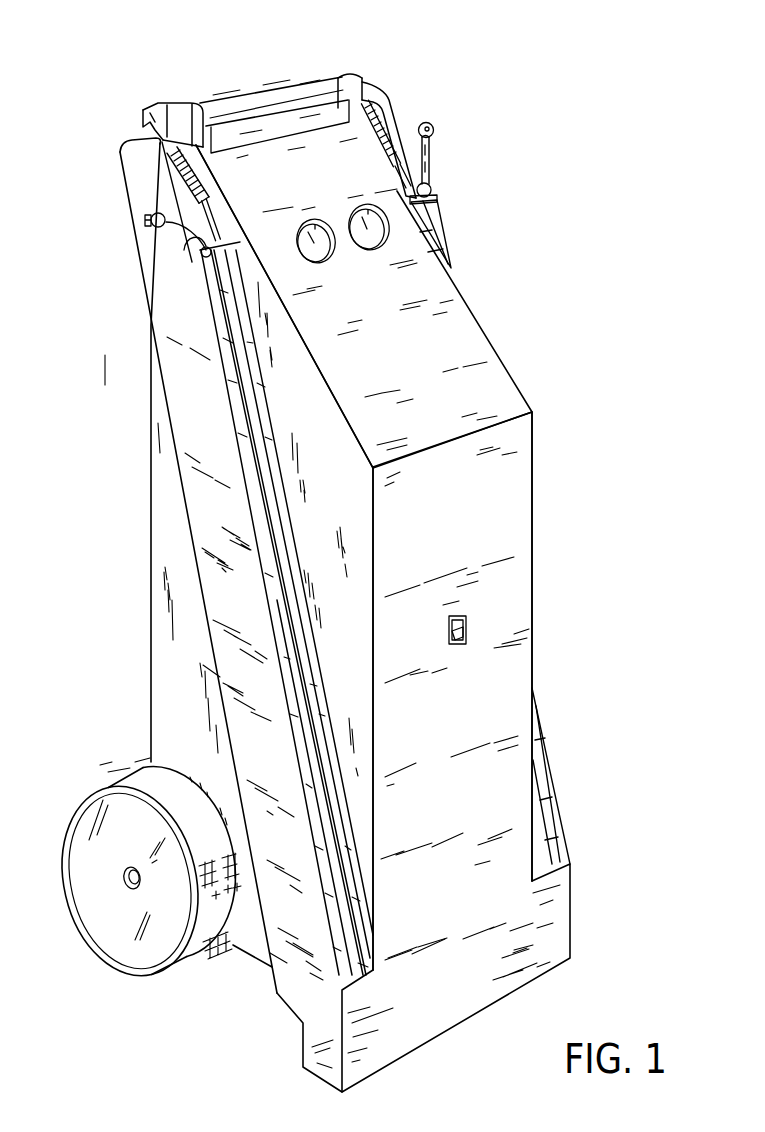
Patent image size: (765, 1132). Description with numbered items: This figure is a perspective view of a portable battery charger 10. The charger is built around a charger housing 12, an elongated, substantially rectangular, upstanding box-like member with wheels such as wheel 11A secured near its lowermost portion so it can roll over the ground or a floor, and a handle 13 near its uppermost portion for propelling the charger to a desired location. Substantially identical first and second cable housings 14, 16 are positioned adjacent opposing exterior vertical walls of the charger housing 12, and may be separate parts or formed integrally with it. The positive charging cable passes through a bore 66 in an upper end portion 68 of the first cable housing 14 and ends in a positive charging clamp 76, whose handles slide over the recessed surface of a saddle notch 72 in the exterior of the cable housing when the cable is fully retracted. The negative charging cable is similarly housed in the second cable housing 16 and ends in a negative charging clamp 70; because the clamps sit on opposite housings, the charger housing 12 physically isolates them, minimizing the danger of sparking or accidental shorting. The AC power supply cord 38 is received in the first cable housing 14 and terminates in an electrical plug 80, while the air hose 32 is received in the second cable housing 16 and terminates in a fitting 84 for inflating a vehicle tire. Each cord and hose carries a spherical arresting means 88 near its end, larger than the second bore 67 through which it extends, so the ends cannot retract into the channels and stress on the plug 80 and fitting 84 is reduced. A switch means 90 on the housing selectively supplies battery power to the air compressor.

The portable battery charger 10 is at (416, 54).
The wheel 11A is at (92, 782).
The charger housing 12 is at (440, 327).
The handle 13 is at (275, 92).
The first cable housing 14 is at (193, 415).
The second cable housing 16 is at (444, 230).
The air hose 32 is at (431, 192).
The AC power supply cord 38 is at (201, 247).
The bore 66 is at (229, 247).
The second bore 67 is at (434, 194).
The upper end portion 68 is at (241, 255).
The negative charging clamp 70 is at (368, 78).
The saddle notch 72 is at (187, 212).
The positive charging clamp 76 is at (176, 143).
The electrical plug 80 is at (158, 228).
The fitting 84 is at (431, 124).
The retraction arresting means 88 is at (207, 262).
The switch means 90 is at (464, 615).